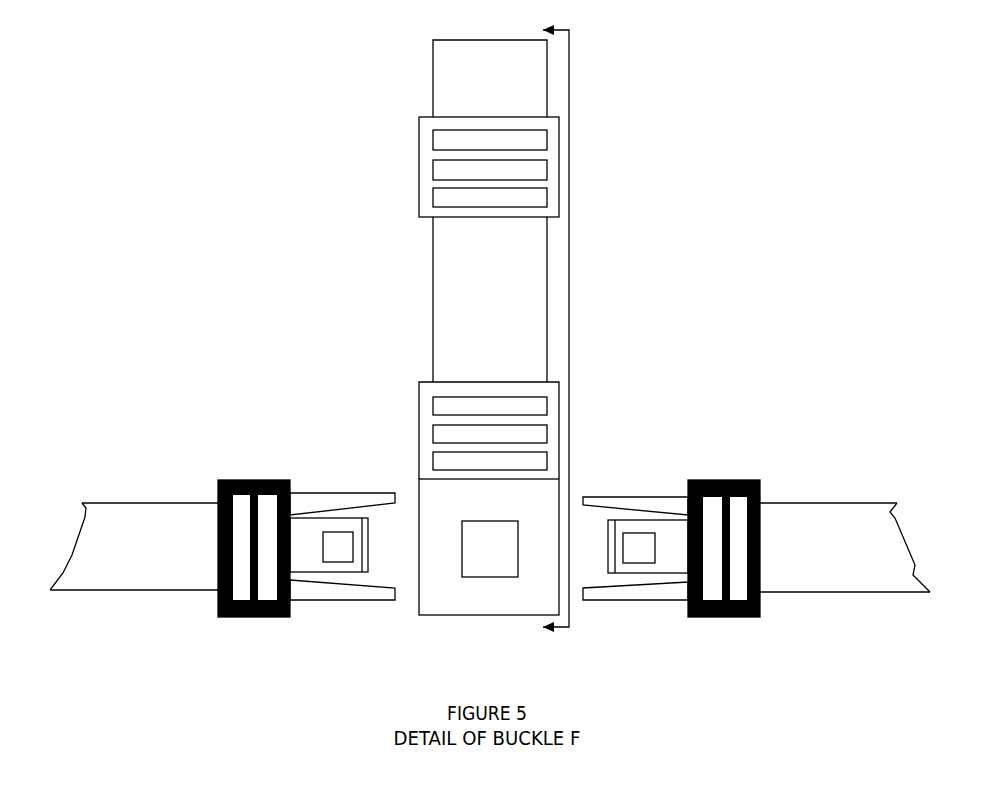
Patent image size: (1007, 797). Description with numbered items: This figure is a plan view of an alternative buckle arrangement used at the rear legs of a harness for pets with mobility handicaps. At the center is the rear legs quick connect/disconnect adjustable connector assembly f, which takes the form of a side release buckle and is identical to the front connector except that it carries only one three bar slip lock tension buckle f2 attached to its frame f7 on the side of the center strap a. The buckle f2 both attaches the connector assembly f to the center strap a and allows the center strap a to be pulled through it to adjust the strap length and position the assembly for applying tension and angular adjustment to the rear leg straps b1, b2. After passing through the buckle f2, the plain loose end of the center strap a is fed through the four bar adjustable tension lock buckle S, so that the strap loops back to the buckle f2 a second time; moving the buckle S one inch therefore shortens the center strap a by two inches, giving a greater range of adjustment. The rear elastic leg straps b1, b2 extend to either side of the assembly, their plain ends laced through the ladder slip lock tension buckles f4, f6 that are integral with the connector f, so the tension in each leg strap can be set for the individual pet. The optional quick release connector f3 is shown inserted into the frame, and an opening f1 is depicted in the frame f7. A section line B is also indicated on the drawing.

The center strap a is at (490, 211).
The four bar adjustable tension lock buckle S is at (561, 165).
The section line B is at (575, 328).
The rear legs quick connect/disconnect adjustable connector assembly f is at (585, 430).
The buckle square opening f1 is at (490, 549).
The three bar slip lock tension buckle f2 is at (417, 432).
The quick release connector f3 is at (315, 490).
The ladder slip lock tension buckle f4 is at (258, 478).
The ladder slip lock tension buckle f6 is at (728, 478).
The frame f7 is at (489, 547).
The rear elastic leg strap b1 is at (134, 546).
The rear elastic leg strap b2 is at (845, 547).